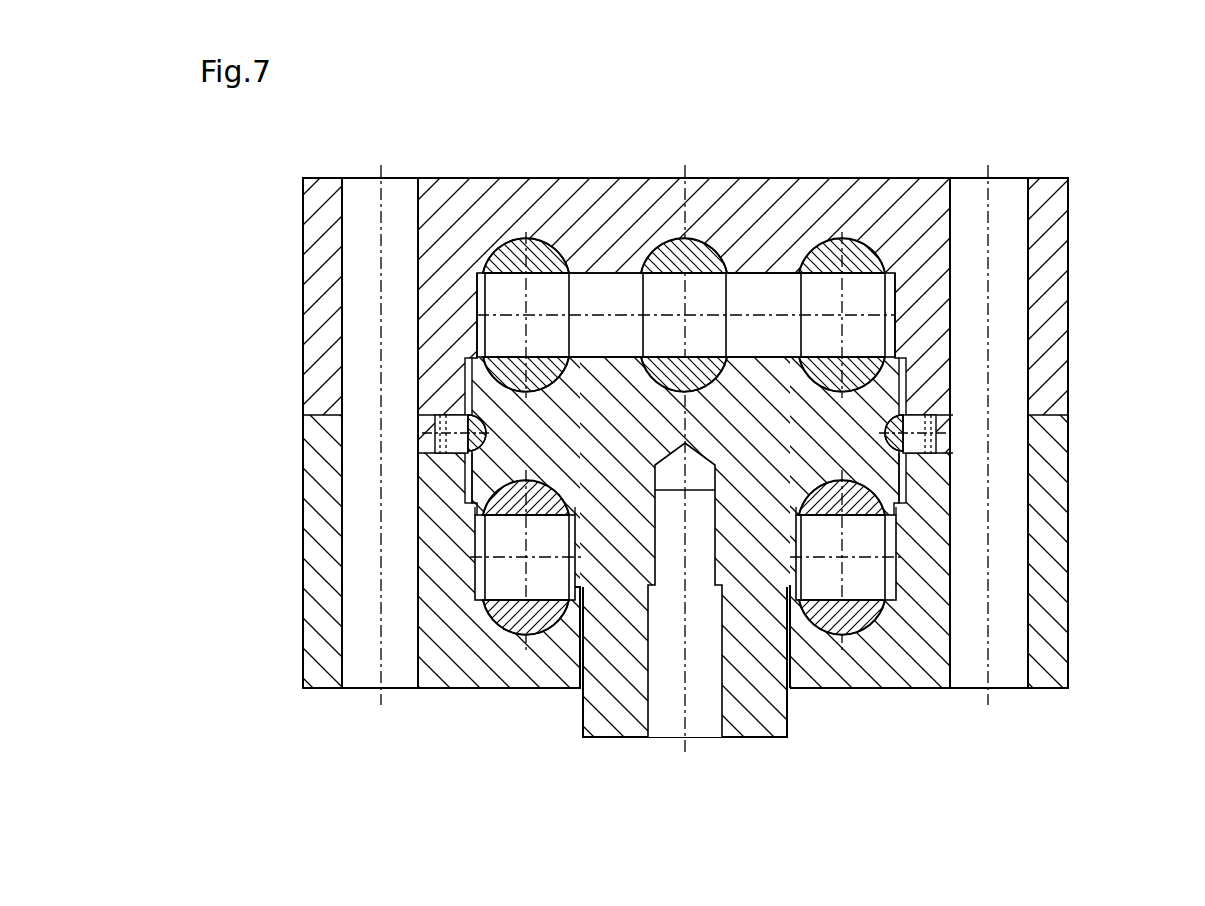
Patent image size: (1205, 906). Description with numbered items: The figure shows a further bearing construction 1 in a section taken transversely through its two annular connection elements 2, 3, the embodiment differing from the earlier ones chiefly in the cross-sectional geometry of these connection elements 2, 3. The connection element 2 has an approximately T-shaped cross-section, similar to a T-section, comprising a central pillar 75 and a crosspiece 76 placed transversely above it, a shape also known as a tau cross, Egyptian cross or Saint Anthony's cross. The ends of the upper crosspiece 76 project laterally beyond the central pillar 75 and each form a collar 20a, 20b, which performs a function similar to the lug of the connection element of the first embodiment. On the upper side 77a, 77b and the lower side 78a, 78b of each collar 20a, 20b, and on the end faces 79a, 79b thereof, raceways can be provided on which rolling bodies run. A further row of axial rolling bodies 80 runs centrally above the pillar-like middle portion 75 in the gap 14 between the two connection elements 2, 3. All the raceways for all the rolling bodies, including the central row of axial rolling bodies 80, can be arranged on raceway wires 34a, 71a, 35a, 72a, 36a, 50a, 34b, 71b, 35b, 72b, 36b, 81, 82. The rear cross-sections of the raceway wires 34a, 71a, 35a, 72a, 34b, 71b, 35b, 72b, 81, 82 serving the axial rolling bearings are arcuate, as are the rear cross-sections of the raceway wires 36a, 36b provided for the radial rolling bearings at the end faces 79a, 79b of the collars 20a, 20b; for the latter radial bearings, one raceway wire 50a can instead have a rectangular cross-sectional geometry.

The bearing construction 1 is at (782, 80).
The connection element 2 is at (618, 697).
The connection element 3 is at (930, 200).
The gap 14 is at (597, 290).
The collar 20a is at (482, 462).
The collar 20b is at (889, 462).
The raceway wire 34a is at (543, 393).
The raceway wire 34b is at (812, 380).
The raceway wire 35a is at (535, 497).
The raceway wire 35b is at (812, 497).
The raceway wire 36a is at (447, 422).
The raceway wire 36b is at (924, 422).
The raceway wire 50a is at (478, 432).
The raceway wire 71a is at (558, 252).
The raceway wire 71b is at (855, 230).
The raceway wire 72a is at (542, 617).
The raceway wire 72b is at (855, 610).
The central pillar 75 is at (748, 683).
The crosspiece 76 is at (762, 300).
The upper side of collar 77a is at (474, 352).
The upper side of collar 77b is at (897, 352).
The lower side of collar 78a is at (478, 535).
The lower side of collar 78b is at (893, 535).
The end face of collar 79a is at (470, 392).
The end face of collar 79b is at (903, 392).
The axial rolling bodies 80 is at (693, 290).
The raceway wire 81 is at (633, 400).
The raceway wire 82 is at (710, 240).